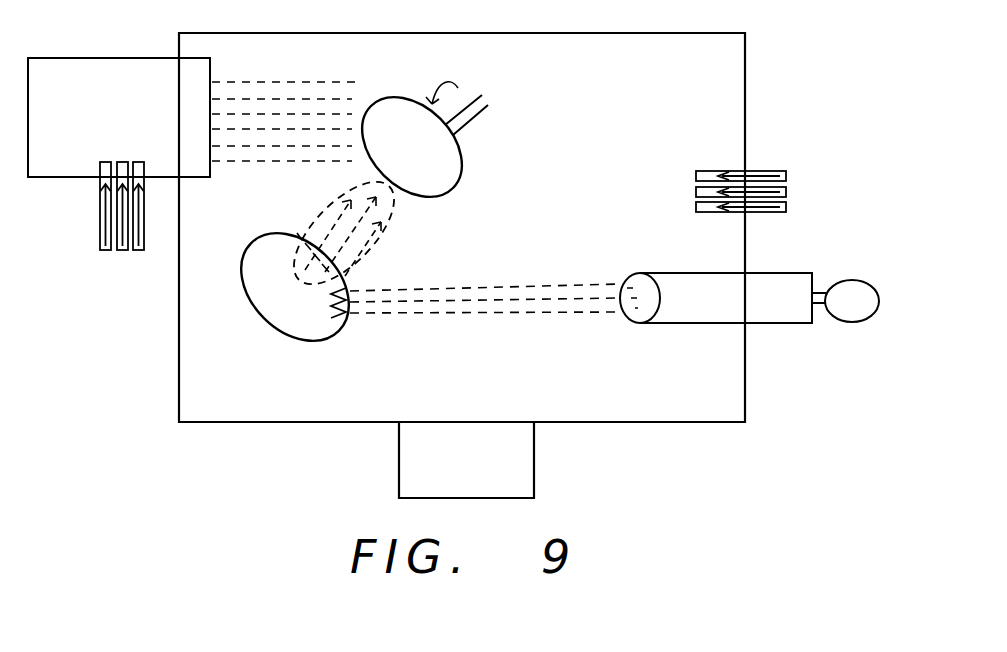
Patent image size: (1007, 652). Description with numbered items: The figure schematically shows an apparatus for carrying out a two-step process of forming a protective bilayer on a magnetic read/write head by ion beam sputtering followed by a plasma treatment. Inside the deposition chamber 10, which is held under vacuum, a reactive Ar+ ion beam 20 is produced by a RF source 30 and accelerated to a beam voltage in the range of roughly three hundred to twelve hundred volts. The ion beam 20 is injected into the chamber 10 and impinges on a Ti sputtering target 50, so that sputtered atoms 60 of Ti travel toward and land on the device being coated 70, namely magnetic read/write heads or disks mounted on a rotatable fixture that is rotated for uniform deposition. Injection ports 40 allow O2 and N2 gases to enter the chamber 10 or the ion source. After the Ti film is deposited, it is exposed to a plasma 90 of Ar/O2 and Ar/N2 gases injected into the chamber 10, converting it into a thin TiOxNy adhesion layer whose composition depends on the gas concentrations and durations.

The deposition chamber 10 is at (746, 62).
The ion beam 20 is at (500, 284).
The RF source 30 is at (866, 284).
The injection ports 40 is at (775, 170).
The sputtering target 50 is at (258, 304).
The sputtered atoms 60 is at (317, 211).
The device being coated 70 is at (445, 170).
The plasma 90 is at (293, 82).